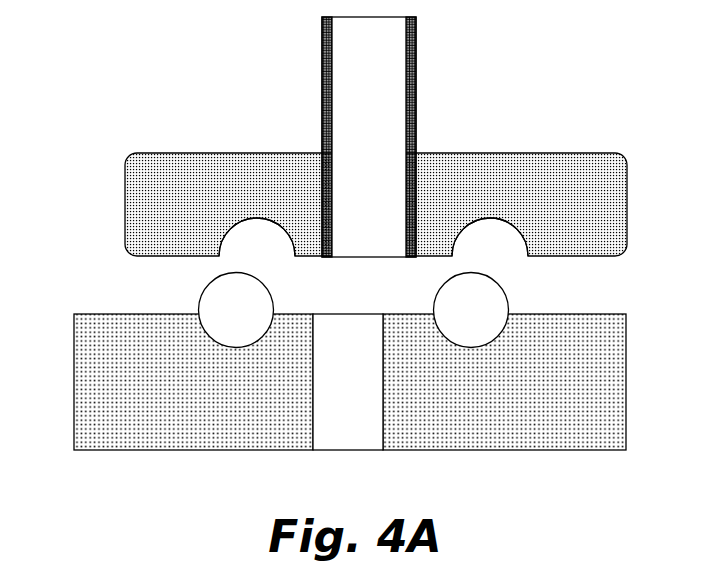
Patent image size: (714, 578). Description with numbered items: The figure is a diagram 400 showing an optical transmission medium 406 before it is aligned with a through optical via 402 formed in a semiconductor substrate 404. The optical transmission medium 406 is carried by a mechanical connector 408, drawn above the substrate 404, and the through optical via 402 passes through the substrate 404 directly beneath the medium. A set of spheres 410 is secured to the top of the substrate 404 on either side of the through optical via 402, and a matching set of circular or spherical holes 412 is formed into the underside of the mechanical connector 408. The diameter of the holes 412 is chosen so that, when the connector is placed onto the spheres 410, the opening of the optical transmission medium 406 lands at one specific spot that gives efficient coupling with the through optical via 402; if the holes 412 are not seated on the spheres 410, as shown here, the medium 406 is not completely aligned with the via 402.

The diagram 400 is at (84, 115).
The through optical via 402 is at (330, 388).
The semiconductor substrate 404 is at (517, 410).
The optical transmission medium 406 is at (345, 134).
The mechanical connector 408 is at (267, 152).
The spheres 410 is at (207, 317).
The holes 412 is at (238, 256).